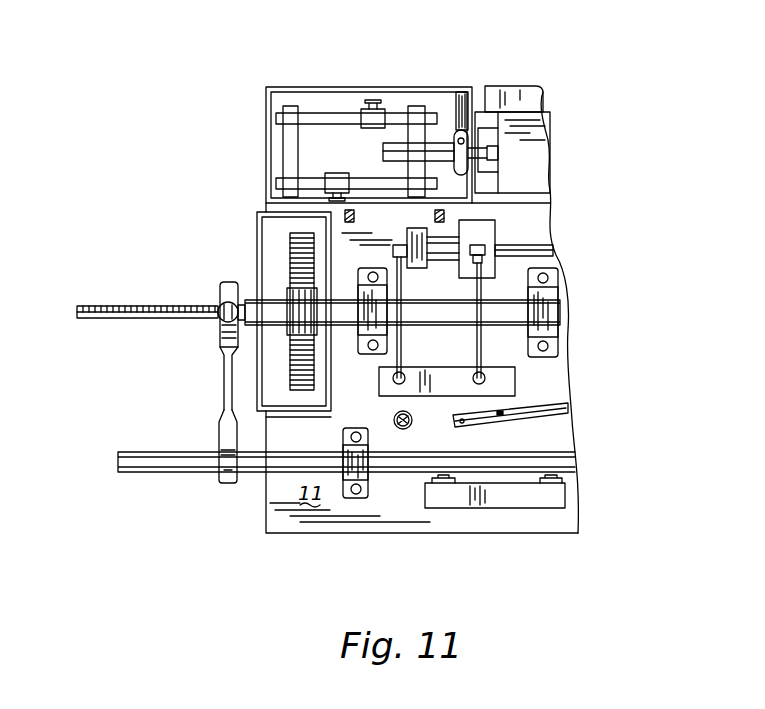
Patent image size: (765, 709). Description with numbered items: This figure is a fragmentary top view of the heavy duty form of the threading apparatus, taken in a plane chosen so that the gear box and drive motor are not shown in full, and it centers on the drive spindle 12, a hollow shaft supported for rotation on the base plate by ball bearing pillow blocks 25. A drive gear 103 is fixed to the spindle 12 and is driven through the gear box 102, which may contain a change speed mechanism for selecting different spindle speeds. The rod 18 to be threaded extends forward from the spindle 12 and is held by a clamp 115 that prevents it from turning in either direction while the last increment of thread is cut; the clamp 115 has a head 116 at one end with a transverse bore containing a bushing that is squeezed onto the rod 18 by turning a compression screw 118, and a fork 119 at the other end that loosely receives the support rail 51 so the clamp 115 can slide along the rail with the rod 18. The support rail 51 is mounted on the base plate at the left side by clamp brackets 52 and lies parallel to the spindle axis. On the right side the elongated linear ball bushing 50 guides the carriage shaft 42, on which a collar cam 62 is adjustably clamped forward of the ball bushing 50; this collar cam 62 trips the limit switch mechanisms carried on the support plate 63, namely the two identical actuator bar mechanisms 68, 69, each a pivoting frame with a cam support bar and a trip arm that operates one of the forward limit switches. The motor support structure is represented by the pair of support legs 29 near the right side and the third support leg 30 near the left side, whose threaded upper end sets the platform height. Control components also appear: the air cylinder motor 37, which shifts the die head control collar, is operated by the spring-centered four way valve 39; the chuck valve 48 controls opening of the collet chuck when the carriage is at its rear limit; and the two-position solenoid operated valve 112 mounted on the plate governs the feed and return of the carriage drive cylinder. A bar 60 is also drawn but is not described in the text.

The drive spindle 12 is at (452, 315).
The rod 18 is at (110, 305).
The ball bearing pillow blocks 25 is at (368, 354).
The support legs 29 is at (447, 215).
The third support leg 30 is at (393, 420).
The air cylinder motor 37 is at (448, 255).
The spring-centered four way valve 39 is at (452, 388).
The carriage shaft 42 is at (443, 143).
The chuck valve 48 is at (523, 93).
The linear ball bushing 50 is at (543, 173).
The support rail 51 is at (165, 455).
The clamp brackets 52 is at (368, 490).
The bar 60 is at (565, 412).
The collar cam 62 is at (458, 174).
The support plate 63 is at (354, 163).
The actuator bar mechanism 68 is at (345, 62).
The actuator bar mechanism 69 is at (309, 177).
The gear box 102 is at (258, 220).
The drive gear 103 is at (290, 247).
The solenoid operated valve 112 is at (515, 495).
The clamp 115 is at (222, 378).
The head 116 is at (228, 290).
The compression screw 118 is at (222, 318).
The fork 119 is at (225, 478).